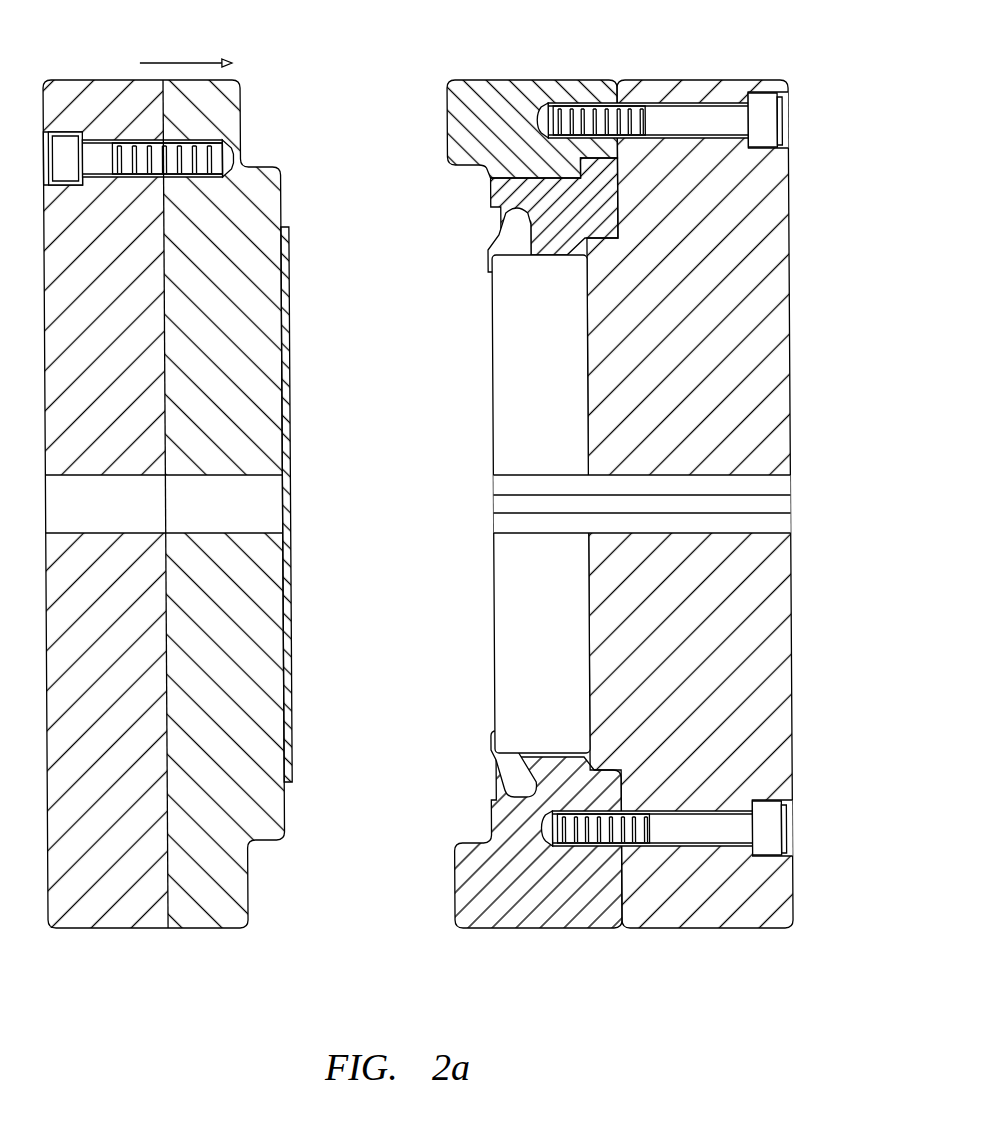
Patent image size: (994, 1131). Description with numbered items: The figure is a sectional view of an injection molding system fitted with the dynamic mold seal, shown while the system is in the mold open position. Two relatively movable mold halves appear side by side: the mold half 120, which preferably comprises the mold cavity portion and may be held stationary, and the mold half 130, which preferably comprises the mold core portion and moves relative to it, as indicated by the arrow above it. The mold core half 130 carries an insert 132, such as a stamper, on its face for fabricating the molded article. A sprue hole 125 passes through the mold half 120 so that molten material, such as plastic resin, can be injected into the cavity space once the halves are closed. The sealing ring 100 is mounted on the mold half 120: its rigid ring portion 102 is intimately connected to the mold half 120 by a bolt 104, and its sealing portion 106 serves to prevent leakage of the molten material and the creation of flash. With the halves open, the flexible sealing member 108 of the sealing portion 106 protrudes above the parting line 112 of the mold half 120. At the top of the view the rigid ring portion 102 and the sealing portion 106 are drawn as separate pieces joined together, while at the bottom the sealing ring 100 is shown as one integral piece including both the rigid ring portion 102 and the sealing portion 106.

The sealing ring 100 is at (619, 489).
The rigid ring portion 102 is at (558, 80).
The bolt 104 is at (777, 120).
The sealing portion 106 is at (552, 217).
The flexible sealing member 108 is at (487, 250).
The parting line 112 is at (495, 587).
The mold half 120 is at (700, 80).
The sprue hole 125 is at (780, 495).
The mold half 130 is at (102, 80).
The insert 132 is at (289, 247).